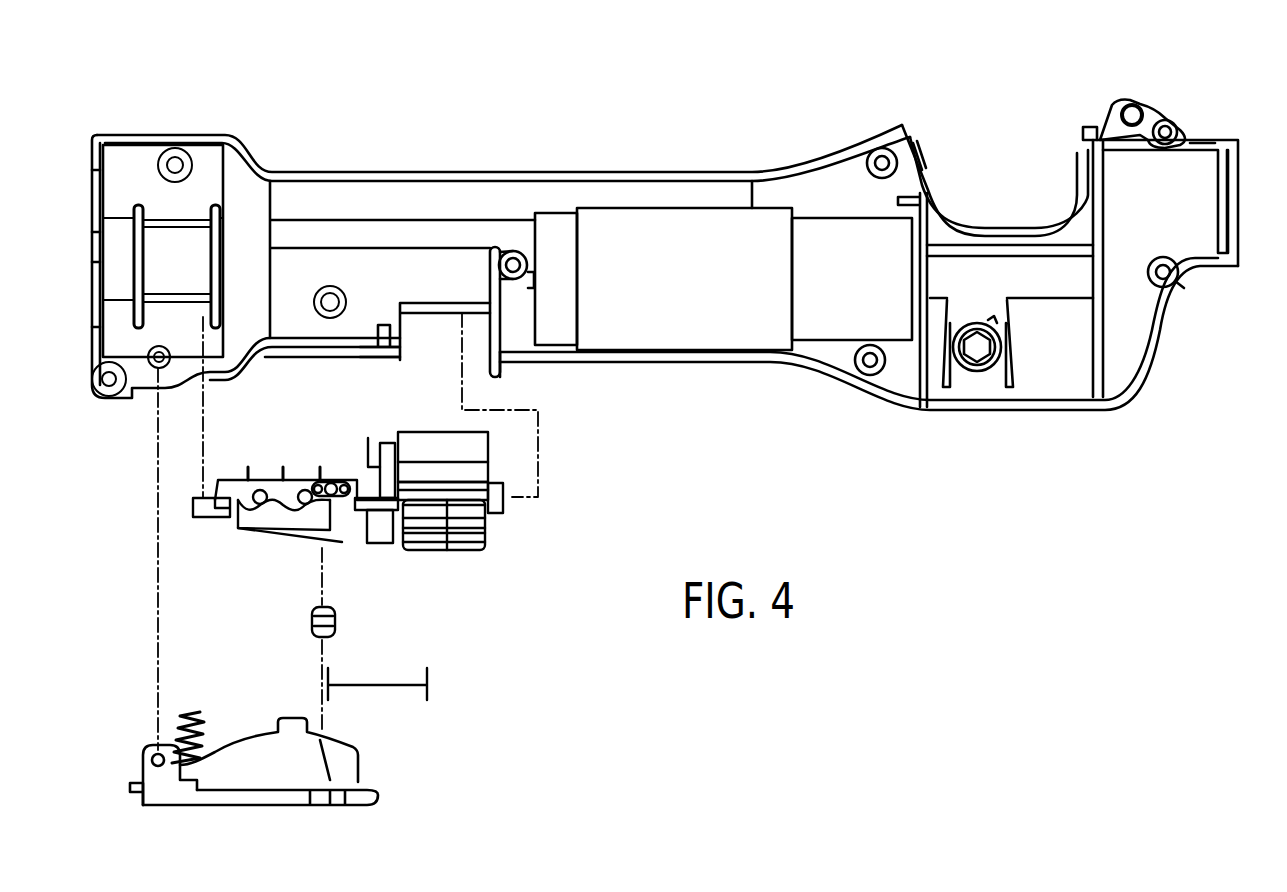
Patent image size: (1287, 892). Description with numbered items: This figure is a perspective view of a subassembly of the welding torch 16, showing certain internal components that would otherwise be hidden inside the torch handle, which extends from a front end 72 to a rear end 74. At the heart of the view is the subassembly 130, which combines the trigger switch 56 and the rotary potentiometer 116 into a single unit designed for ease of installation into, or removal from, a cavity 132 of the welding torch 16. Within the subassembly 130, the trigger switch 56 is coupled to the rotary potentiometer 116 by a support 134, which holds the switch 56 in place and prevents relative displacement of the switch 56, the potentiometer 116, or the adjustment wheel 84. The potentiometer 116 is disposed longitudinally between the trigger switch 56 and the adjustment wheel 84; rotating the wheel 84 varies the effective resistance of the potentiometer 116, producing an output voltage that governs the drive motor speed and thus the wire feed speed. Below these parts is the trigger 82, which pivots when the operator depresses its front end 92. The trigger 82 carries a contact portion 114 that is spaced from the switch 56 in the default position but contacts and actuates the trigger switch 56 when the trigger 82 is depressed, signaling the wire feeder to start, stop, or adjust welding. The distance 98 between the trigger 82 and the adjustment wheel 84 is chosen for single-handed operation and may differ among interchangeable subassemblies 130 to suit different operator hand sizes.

The welding torch 16 is at (850, 62).
The rear end 74 is at (88, 157).
The front end 72 is at (1237, 150).
The cavity 132 is at (411, 287).
The support 134 is at (362, 482).
The subassembly 130 is at (478, 585).
The adjustment wheel 84 is at (468, 550).
The rotary potentiometer 116 is at (385, 543).
The trigger switch 56 is at (295, 530).
The contact portion 114 is at (338, 622).
The distance 98 is at (377, 686).
The trigger 82 is at (255, 806).
The front end 92 is at (355, 806).